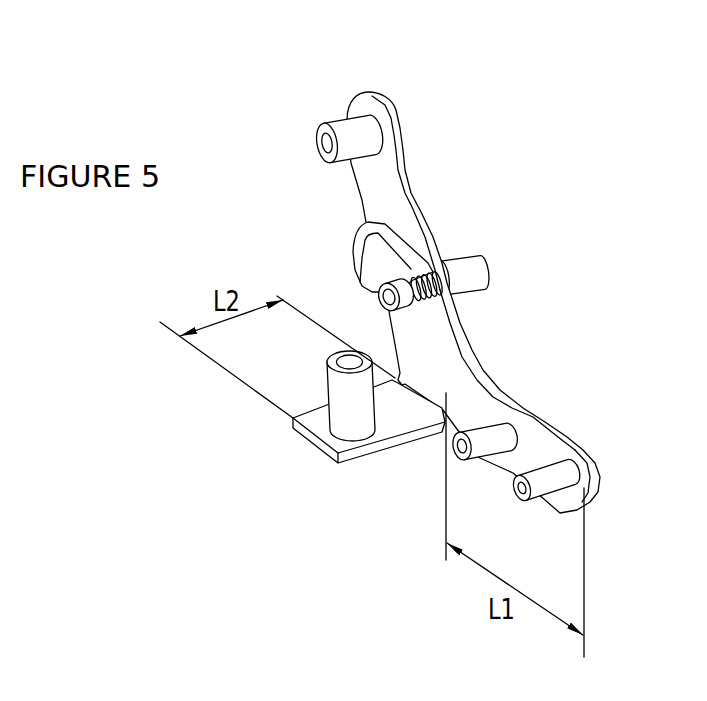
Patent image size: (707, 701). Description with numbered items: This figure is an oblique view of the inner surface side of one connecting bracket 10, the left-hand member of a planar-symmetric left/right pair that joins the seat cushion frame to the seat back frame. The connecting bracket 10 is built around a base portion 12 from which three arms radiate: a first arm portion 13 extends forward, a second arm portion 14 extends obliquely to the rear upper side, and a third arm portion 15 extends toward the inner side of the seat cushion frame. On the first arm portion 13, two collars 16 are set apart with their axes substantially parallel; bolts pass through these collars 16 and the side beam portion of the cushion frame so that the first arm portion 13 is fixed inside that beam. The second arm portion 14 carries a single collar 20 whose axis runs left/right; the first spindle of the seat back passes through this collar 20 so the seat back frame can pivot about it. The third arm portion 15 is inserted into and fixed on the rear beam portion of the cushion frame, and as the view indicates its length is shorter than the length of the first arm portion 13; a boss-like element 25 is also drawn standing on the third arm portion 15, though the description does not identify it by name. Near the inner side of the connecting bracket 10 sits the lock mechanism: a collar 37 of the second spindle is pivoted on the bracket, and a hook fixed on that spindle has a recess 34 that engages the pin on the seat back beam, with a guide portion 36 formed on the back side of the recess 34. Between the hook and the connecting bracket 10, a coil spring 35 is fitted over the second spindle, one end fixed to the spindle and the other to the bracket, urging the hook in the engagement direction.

The connecting bracket 10 is at (370, 92).
The base portion 12 is at (463, 330).
The first arm portion 13 is at (597, 497).
The second arm portion 14 is at (406, 165).
The third arm portion 15 is at (300, 433).
The collar 16 is at (478, 461).
The collar 20 is at (317, 126).
The boss 25 is at (327, 361).
The recess 34 is at (358, 284).
The coil spring 35 is at (425, 277).
The guide portion 36 is at (354, 233).
The collar 37 is at (495, 270).